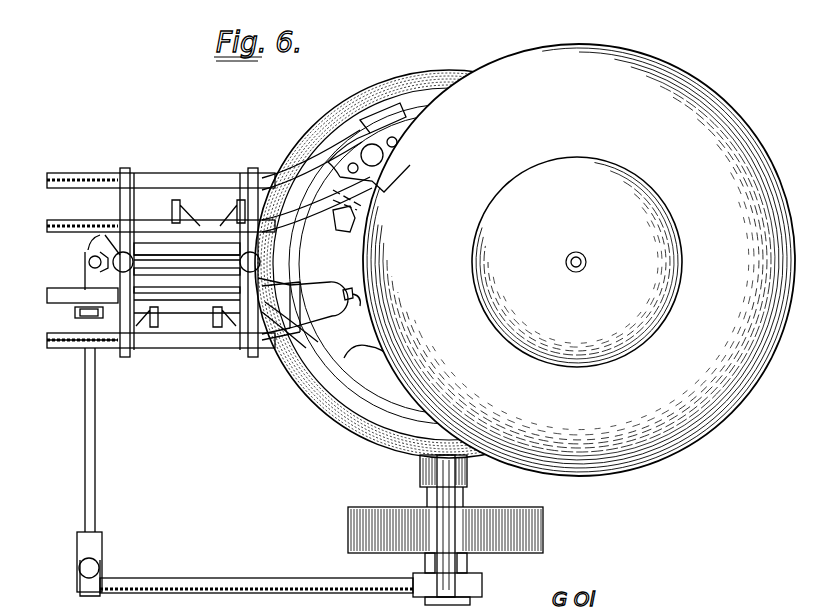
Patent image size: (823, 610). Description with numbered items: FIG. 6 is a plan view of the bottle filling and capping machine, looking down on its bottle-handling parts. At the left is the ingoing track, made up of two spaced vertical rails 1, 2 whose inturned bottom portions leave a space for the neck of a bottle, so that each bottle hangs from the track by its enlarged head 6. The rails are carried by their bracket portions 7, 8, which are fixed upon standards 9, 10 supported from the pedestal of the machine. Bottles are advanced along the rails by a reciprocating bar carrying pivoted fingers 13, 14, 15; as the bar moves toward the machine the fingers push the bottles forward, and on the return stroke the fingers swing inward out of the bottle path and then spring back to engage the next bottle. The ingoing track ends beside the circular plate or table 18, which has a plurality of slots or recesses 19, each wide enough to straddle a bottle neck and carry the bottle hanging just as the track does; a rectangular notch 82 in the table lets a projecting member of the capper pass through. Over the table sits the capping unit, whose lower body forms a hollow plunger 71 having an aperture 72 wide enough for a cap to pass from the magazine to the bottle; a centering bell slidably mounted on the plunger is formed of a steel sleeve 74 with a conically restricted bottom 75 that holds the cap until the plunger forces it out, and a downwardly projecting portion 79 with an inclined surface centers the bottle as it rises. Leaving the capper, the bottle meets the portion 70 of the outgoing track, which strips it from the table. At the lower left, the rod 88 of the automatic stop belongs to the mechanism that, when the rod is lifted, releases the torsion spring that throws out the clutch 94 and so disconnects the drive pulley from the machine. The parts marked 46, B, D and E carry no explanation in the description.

The vertical rail 1 is at (64, 300).
The vertical rail 2 is at (66, 348).
The enlarged head of the bottle 6 is at (178, 346).
The bracket portion 7 is at (122, 336).
The bracket portion 8 is at (268, 344).
The standard 9 is at (152, 252).
The standard 10 is at (240, 248).
The finger 13 is at (152, 328).
The finger 14 is at (222, 328).
The finger 15 is at (286, 334).
The circular plate or table 18 is at (345, 340).
The slot or recess 19 is at (368, 362).
The pivot block 46 is at (380, 122).
The portion of the outgoing track 70 is at (363, 207).
The hollow plunger 71 is at (332, 156).
The aperture 72 is at (280, 182).
The steel sleeve 74 is at (232, 215).
The conically restricted bottom 75 is at (172, 215).
The downwardly projecting portion 79 is at (325, 297).
The rectangular notch 82 is at (354, 307).
The rod 88 is at (94, 420).
The clutch 94 is at (470, 560).
The base B is at (445, 530).
The disc D is at (579, 260).
The cam ring E is at (356, 112).